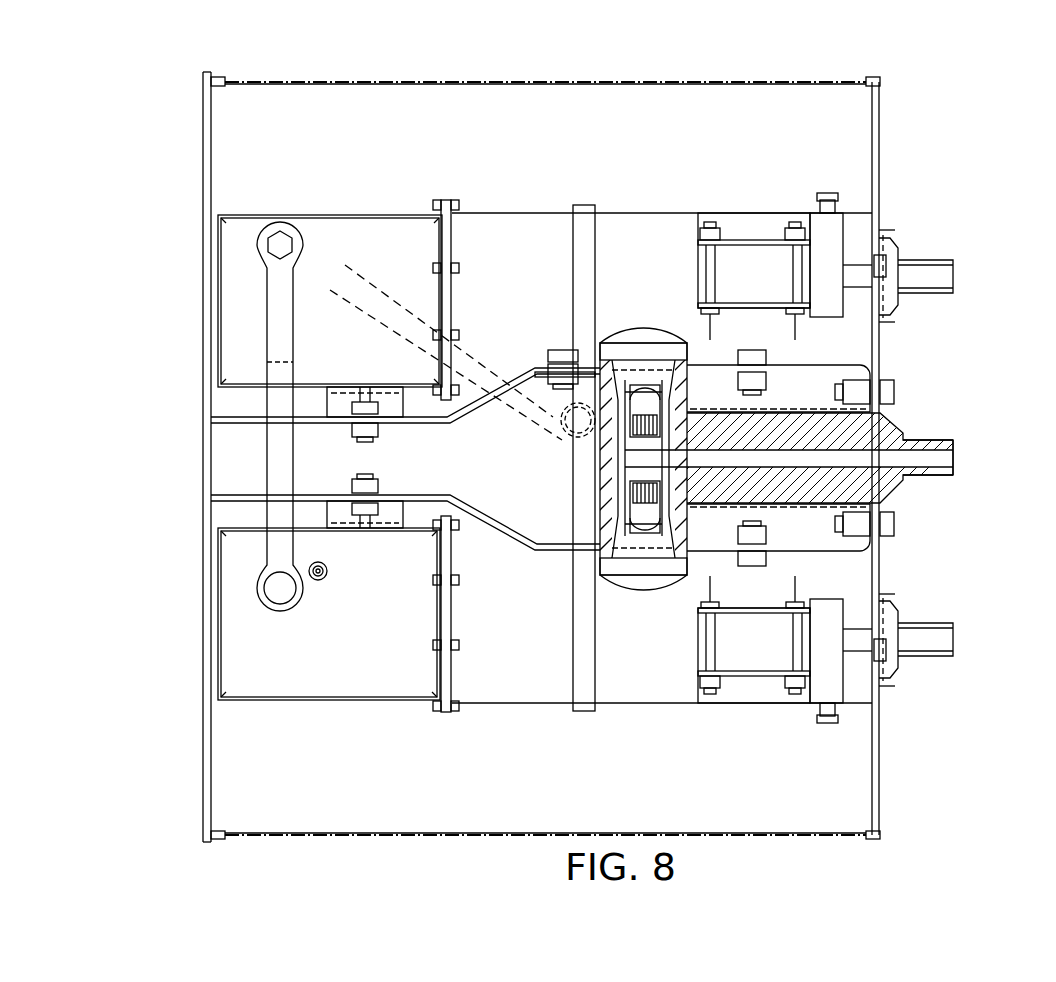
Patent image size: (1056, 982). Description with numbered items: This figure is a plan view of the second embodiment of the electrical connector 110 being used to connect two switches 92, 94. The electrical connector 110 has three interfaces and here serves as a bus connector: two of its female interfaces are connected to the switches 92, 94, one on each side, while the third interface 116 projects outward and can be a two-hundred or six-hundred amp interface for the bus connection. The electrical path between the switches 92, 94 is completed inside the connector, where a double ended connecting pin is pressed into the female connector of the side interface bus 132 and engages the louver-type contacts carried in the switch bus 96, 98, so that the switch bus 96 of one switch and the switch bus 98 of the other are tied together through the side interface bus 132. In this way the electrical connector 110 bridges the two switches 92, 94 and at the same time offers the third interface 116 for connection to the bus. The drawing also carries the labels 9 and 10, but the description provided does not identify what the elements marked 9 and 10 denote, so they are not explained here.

The switch 92 is at (653, 138).
The switch 94 is at (516, 803).
The bearing housing 9 is at (618, 376).
The shaft assembly 10 is at (813, 441).
The switch bus 96 is at (630, 427).
The switch bus 98 is at (630, 487).
The third interface 116 is at (925, 440).
The side interface bus 132 is at (855, 456).
The electrical connector 110 is at (805, 525).